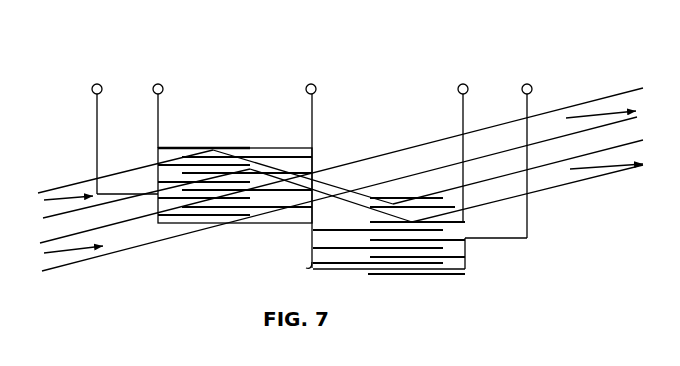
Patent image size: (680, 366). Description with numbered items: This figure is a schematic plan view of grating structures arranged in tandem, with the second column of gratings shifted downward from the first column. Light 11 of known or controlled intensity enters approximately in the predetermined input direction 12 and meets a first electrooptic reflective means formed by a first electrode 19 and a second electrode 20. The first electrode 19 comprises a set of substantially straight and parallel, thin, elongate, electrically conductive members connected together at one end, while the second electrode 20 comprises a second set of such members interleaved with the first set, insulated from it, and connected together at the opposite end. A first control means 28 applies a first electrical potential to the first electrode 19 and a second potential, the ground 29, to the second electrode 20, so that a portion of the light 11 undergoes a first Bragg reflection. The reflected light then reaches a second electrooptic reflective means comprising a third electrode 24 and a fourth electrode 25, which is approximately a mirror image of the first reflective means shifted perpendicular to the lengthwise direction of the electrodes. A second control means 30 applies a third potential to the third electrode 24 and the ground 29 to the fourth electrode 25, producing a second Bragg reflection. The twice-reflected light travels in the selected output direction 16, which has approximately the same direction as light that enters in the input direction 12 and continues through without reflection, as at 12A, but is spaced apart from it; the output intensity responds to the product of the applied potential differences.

The light 11 is at (140, 192).
The predetermined input direction 12 is at (54, 199).
The unreflected light path 12A is at (618, 100).
The selected output direction 16 is at (629, 152).
The first electrode 19 is at (169, 148).
The second electrode 20 is at (295, 149).
The third electrode 24 is at (466, 263).
The fourth electrode 25 is at (306, 269).
The first control means 28 is at (178, 58).
The ground 29 is at (314, 95).
The second control means 30 is at (545, 58).